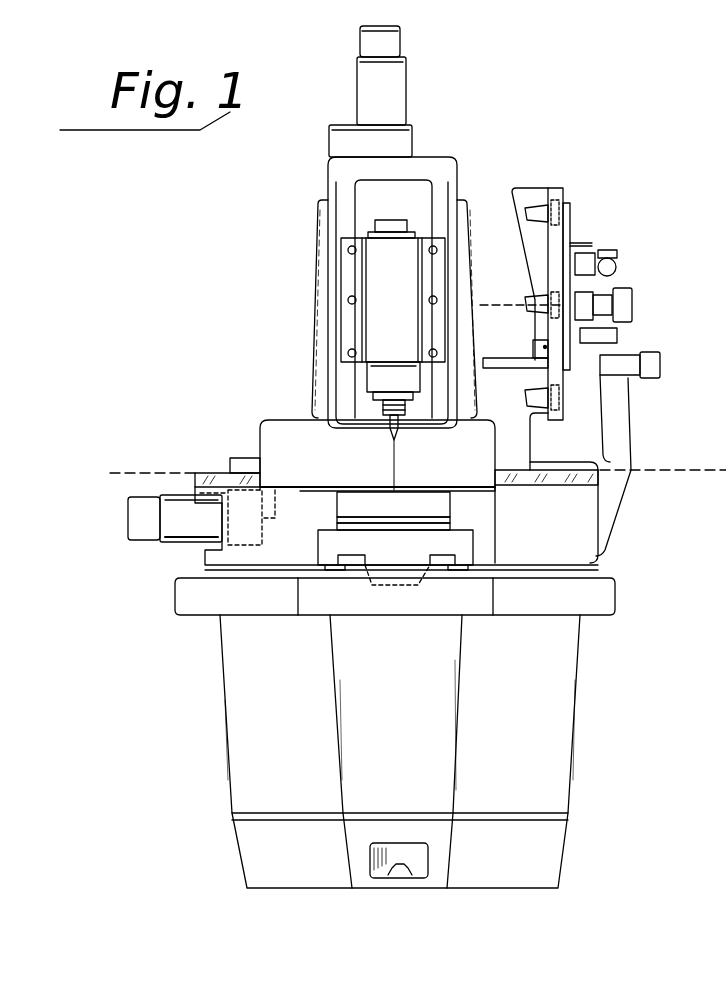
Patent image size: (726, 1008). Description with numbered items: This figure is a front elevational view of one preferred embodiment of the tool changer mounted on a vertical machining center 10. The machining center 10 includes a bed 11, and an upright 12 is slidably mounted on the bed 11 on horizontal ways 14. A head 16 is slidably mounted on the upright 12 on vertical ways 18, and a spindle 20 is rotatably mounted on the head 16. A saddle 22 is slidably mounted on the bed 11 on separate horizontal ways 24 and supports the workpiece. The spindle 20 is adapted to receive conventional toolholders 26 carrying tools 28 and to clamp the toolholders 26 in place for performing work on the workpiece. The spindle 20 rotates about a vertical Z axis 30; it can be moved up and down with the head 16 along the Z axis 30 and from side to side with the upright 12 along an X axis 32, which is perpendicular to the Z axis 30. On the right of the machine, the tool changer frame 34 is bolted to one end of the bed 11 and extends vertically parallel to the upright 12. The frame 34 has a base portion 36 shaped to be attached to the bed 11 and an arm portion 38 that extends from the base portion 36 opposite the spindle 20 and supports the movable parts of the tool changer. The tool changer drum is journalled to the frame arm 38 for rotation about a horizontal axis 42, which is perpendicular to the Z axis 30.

The vertical machining center 10 is at (288, 366).
The bed 11 is at (243, 657).
The upright 12 is at (320, 268).
The horizontal ways 14 is at (205, 470).
The head 16 is at (349, 318).
The vertical ways 18 is at (343, 387).
The spindle 20 is at (375, 396).
The saddle 22 is at (476, 546).
The horizontal ways 24 is at (440, 558).
The toolholders 26 is at (385, 410).
The tools 28 is at (397, 430).
The Z axis 30 is at (393, 455).
The X axis 32 is at (118, 470).
The frame 34 is at (625, 415).
The base portion 36 is at (612, 500).
The arm portion 38 is at (570, 222).
The horizontal axis 42 is at (490, 308).